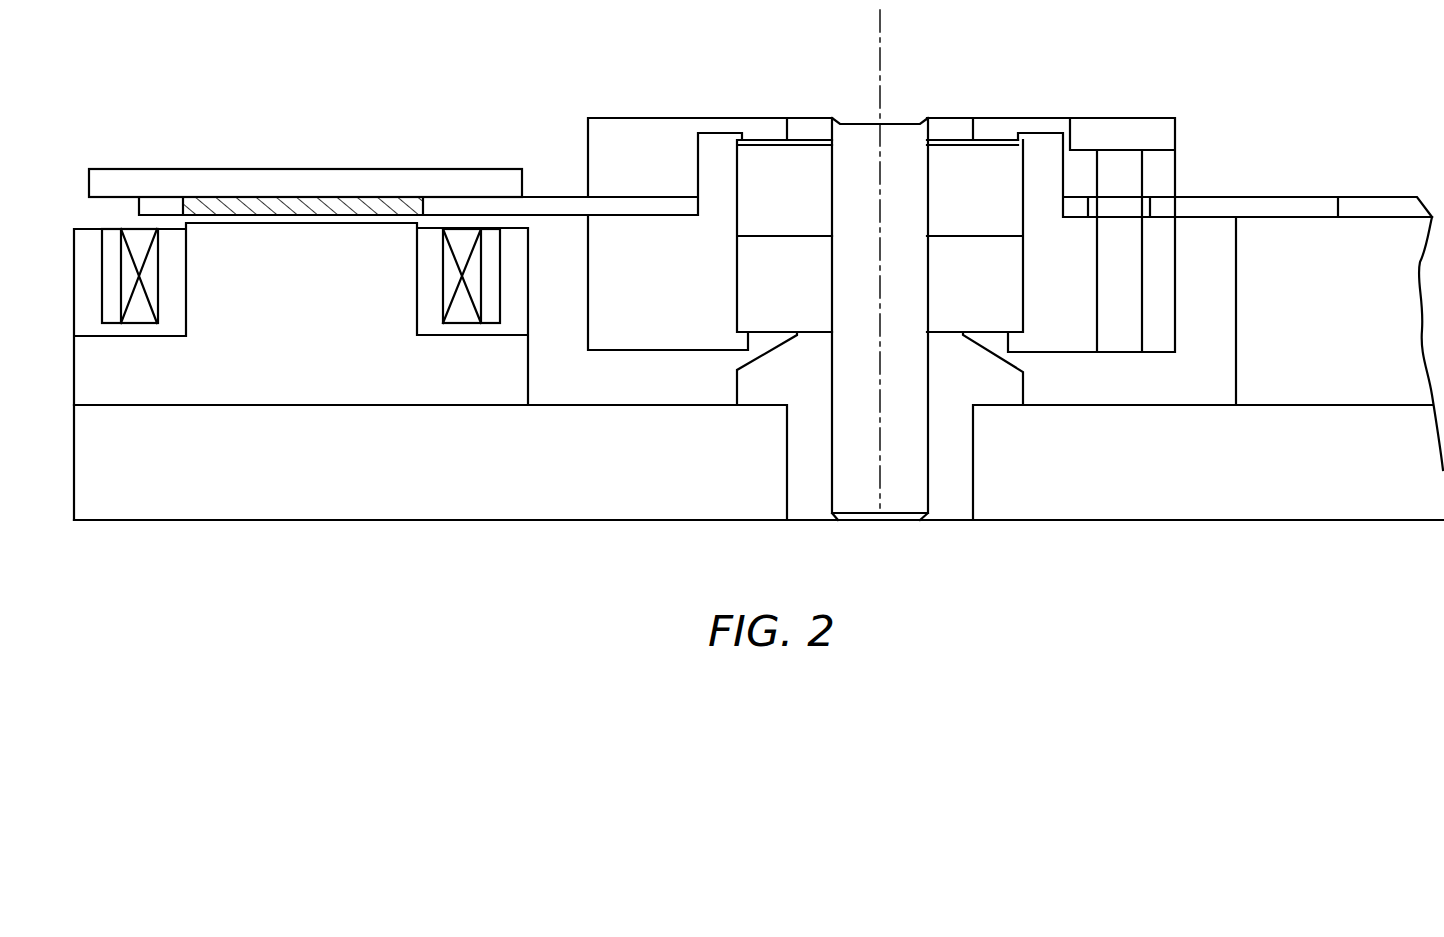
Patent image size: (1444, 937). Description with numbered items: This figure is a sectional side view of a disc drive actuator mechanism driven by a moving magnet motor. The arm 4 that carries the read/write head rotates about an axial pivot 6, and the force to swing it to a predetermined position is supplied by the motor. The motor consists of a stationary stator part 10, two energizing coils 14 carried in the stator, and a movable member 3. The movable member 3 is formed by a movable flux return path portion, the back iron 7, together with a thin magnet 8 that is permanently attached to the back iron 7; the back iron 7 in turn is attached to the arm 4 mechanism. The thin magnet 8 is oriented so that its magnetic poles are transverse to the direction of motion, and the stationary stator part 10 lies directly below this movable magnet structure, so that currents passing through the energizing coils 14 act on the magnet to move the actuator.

The movable member 3 is at (444, 110).
The arm 4 is at (1367, 203).
The axial pivot 6 is at (854, 497).
The back iron 7 is at (165, 185).
The thin magnet 8 is at (293, 200).
The stationary stator part 10 is at (308, 358).
The energizing coils 14 is at (141, 320).